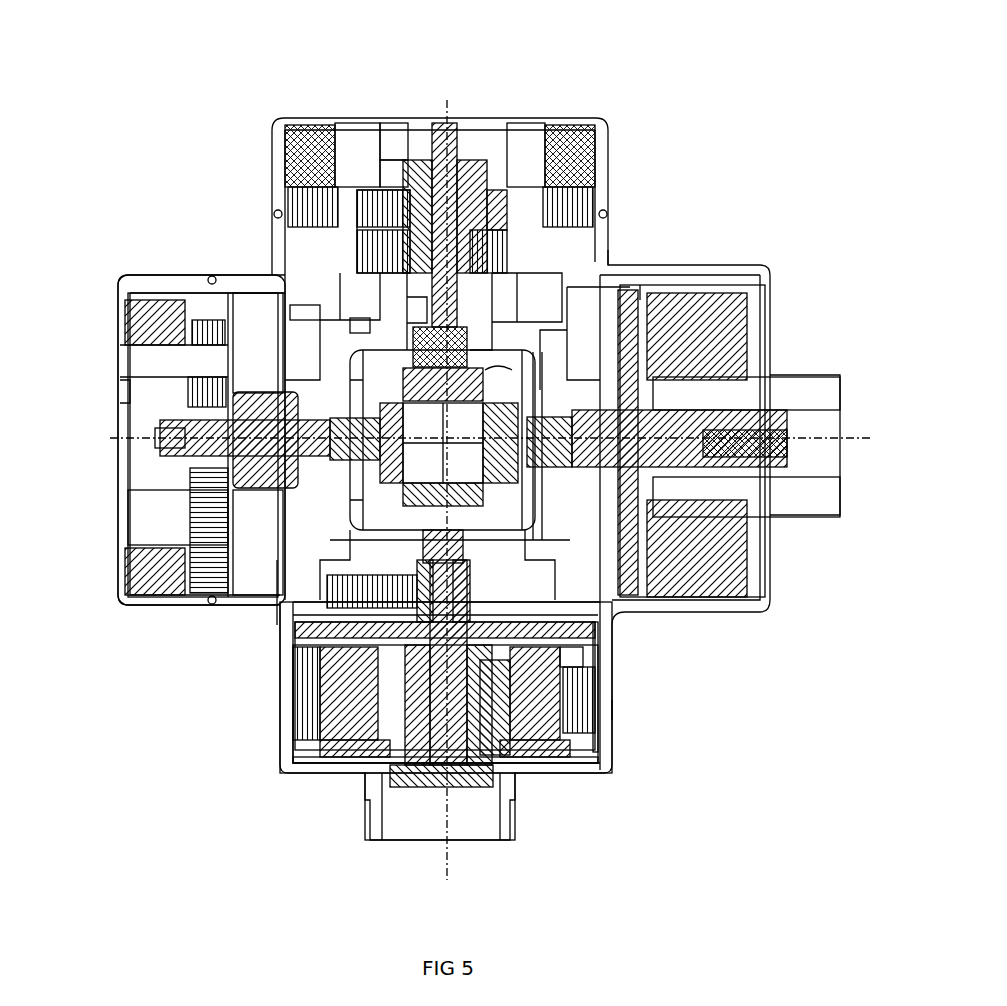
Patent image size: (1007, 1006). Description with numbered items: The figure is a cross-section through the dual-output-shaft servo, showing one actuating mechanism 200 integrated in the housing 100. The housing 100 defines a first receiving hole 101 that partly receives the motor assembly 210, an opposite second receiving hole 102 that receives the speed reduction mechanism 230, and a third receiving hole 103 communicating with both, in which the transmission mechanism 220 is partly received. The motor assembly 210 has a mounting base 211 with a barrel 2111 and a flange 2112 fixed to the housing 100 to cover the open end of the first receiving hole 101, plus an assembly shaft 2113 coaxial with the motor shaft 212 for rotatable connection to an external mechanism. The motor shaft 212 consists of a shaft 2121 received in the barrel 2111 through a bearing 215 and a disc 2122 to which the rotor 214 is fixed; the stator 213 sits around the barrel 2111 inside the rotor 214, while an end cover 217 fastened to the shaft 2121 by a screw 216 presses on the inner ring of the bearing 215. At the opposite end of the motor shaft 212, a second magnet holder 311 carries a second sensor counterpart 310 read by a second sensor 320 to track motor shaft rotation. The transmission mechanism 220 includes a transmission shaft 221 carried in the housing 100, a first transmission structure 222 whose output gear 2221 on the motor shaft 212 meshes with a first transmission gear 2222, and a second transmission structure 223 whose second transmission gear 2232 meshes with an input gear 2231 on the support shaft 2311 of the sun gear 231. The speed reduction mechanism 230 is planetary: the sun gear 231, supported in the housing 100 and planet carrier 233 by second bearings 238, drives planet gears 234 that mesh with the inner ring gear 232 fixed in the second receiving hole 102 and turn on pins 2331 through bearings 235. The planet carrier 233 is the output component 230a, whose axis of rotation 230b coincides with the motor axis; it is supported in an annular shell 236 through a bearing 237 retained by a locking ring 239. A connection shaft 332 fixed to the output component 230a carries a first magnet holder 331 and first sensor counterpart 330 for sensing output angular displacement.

The housing 100 is at (616, 730).
The first receiving hole 101 is at (640, 298).
The second receiving hole 102 is at (530, 255).
The third receiving hole 103 is at (560, 332).
The actuating mechanism 200 is at (775, 268).
The motor assembly 210 is at (774, 594).
The mounting base 211 is at (135, 728).
The barrel 2111 is at (300, 690).
The flange 2112 is at (300, 755).
The assembly shaft 2113 is at (380, 800).
The motor shaft 212 is at (130, 630).
The shaft 2121 is at (330, 700).
The disc 2122 is at (300, 625).
The stator 213 is at (540, 700).
The rotor 214 is at (587, 727).
The bearing 215 is at (577, 637).
The screw 216 is at (447, 790).
The end cover 217 is at (420, 790).
The transmission mechanism 220 is at (355, 518).
The transmission shaft 221 is at (378, 498).
The first transmission structure 222 is at (325, 587).
The output gear 2221 is at (505, 506).
The first transmission gear 2222 is at (338, 580).
The second transmission structure 223 is at (132, 138).
The input gear 2231 is at (345, 240).
The second transmission gear 2232 is at (400, 272).
The speed reduction mechanism 230 is at (315, 195).
The output component 230a is at (365, 135).
The axis of rotation 230b is at (395, 150).
The sun gear 231 is at (492, 225).
The support shaft 2311 is at (455, 195).
The inner ring gear 232 is at (585, 250).
The planet carrier 233 is at (392, 150).
The pin 2331 is at (505, 195).
The planet gear 234 is at (600, 150).
The bearing 235 is at (565, 160).
The annular shell 236 is at (300, 180).
The bearing 237 is at (320, 165).
The second bearing 238 is at (470, 180).
The locking ring 239 is at (355, 140).
The second sensor counterpart 310 is at (600, 604).
The second magnet holder 311 is at (420, 590).
The second sensor 320 is at (660, 552).
The first sensor counterpart 330 is at (300, 318).
The first magnet holder 331 is at (355, 325).
The connection shaft 332 is at (443, 140).